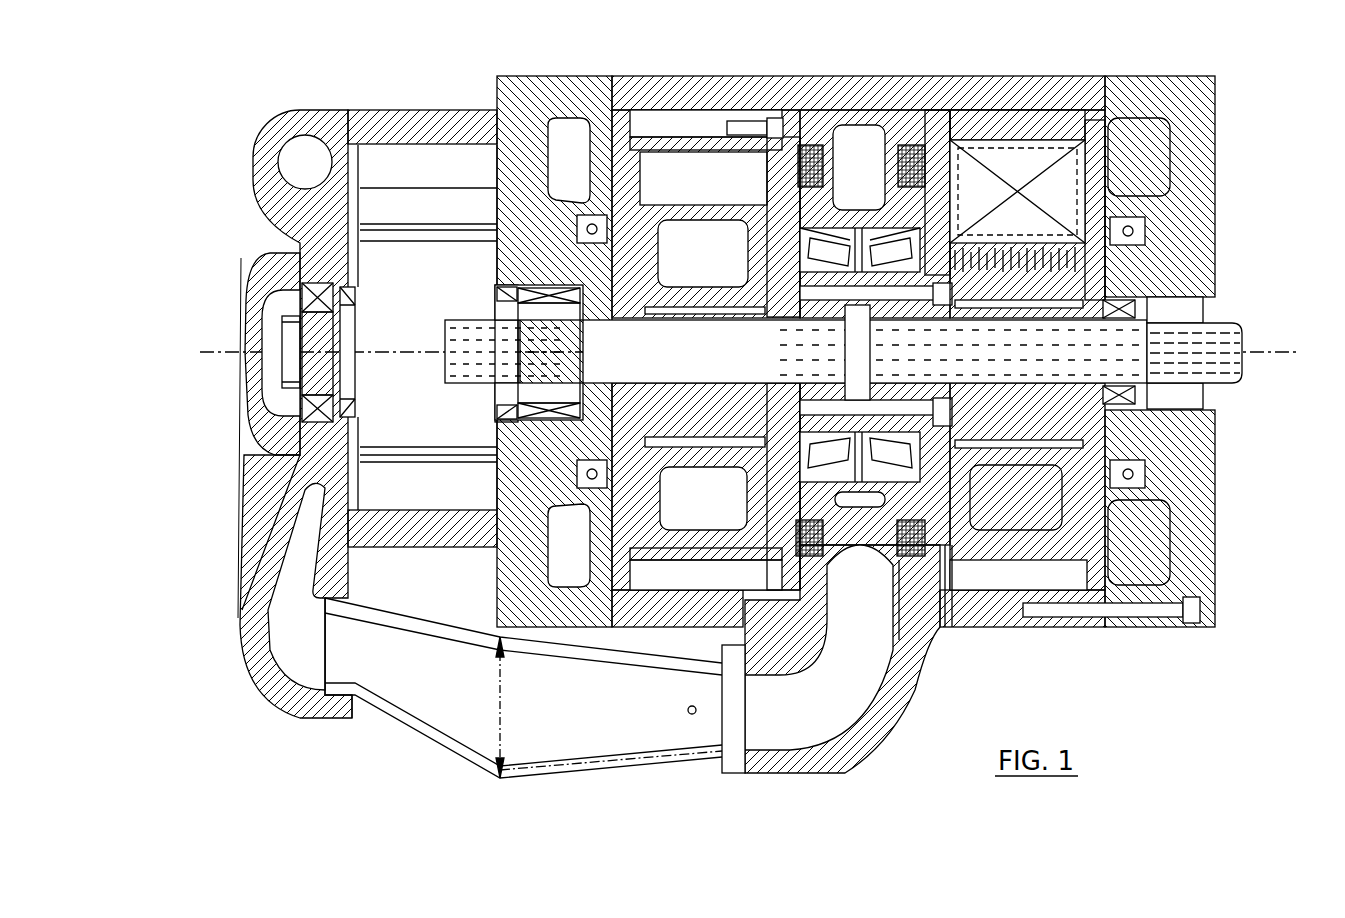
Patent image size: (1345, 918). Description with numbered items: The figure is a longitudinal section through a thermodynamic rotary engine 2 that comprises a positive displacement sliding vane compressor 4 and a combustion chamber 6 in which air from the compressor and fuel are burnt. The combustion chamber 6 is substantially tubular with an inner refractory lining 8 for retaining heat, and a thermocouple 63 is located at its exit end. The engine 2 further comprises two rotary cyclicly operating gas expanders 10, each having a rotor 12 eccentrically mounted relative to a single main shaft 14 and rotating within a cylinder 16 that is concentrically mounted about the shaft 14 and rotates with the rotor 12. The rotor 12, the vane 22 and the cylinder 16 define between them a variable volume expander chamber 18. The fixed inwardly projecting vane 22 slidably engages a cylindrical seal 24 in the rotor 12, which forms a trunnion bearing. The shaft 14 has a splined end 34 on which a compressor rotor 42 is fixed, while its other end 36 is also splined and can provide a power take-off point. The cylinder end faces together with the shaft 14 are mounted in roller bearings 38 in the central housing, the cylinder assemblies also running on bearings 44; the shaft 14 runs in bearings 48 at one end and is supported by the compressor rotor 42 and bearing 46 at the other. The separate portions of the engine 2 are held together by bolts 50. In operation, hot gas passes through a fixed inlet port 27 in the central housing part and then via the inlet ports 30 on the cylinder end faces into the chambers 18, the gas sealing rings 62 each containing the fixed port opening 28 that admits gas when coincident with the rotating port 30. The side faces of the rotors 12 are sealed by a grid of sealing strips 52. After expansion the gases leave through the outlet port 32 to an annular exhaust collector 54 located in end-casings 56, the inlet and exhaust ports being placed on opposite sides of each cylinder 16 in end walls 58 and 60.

The thermodynamic rotary engine 2 is at (987, 78).
The positive displacement sliding vane compressor 4 is at (410, 290).
The combustion chamber 6 is at (863, 112).
The inner refractory lining 8 is at (640, 670).
The rotary cyclicly operating gas expander 10 is at (690, 118).
The rotor 12 is at (697, 207).
The main shaft 14 is at (632, 355).
The cylinder 16 is at (708, 115).
The variable volume expander chamber 18 is at (703, 178).
The vane 22 is at (1108, 113).
The cylindrical seal 24 is at (1043, 260).
The fixed inlet port 27 is at (862, 535).
The fixed inlet port 28 is at (800, 540).
The integral inlet port 30 is at (942, 160).
The outlet port 32 is at (1108, 175).
The splined end 34 is at (447, 360).
The other end 36 is at (1223, 332).
The roller bearings 38 is at (860, 455).
The compressor rotor 42 is at (500, 388).
The bearings 44 is at (1137, 232).
The bearing 46 is at (537, 293).
The bearings 48 is at (1135, 295).
The bolts 50 is at (790, 125).
The sealing strips 52 is at (650, 203).
The annular exhaust collector 54 is at (525, 112).
The end-casings 56 is at (567, 148).
The end wall 58 is at (938, 548).
The end wall 60 is at (333, 720).
The gas sealing rings 62 is at (812, 148).
The thermocouple 63 is at (689, 713).